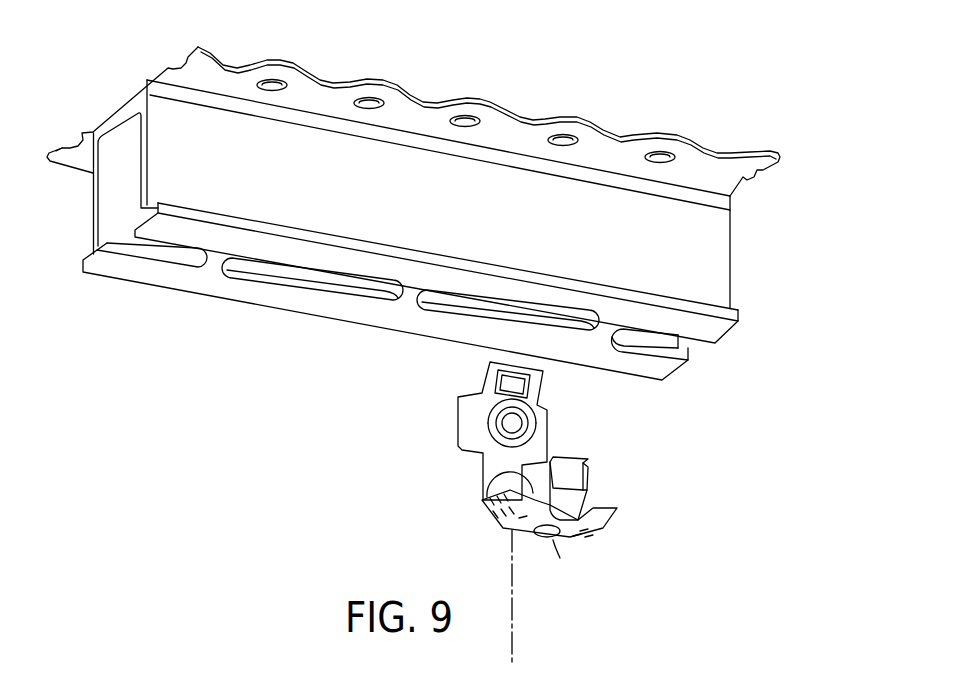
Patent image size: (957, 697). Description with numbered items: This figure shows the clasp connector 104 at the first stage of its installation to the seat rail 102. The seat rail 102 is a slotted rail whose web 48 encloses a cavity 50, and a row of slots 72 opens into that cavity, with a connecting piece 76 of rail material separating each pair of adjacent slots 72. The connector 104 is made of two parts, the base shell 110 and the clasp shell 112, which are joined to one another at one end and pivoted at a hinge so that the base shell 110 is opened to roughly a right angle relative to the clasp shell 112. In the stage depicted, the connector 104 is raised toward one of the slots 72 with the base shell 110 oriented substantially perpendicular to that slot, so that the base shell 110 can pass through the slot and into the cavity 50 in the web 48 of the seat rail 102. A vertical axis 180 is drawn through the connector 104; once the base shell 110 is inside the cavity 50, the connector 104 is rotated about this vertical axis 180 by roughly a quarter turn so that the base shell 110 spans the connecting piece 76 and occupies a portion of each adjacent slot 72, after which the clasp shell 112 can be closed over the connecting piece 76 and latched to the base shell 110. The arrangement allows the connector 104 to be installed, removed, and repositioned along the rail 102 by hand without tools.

The seat rail 102 is at (507, 76).
The web 48 is at (93, 189).
The cavity 50 is at (117, 211).
The slots 72 is at (352, 274).
The connecting piece 76 is at (410, 278).
The clasp connector 104 is at (388, 437).
The base shell 110 is at (550, 436).
The clasp shell 112 is at (556, 545).
The vertical axis 180 is at (514, 642).